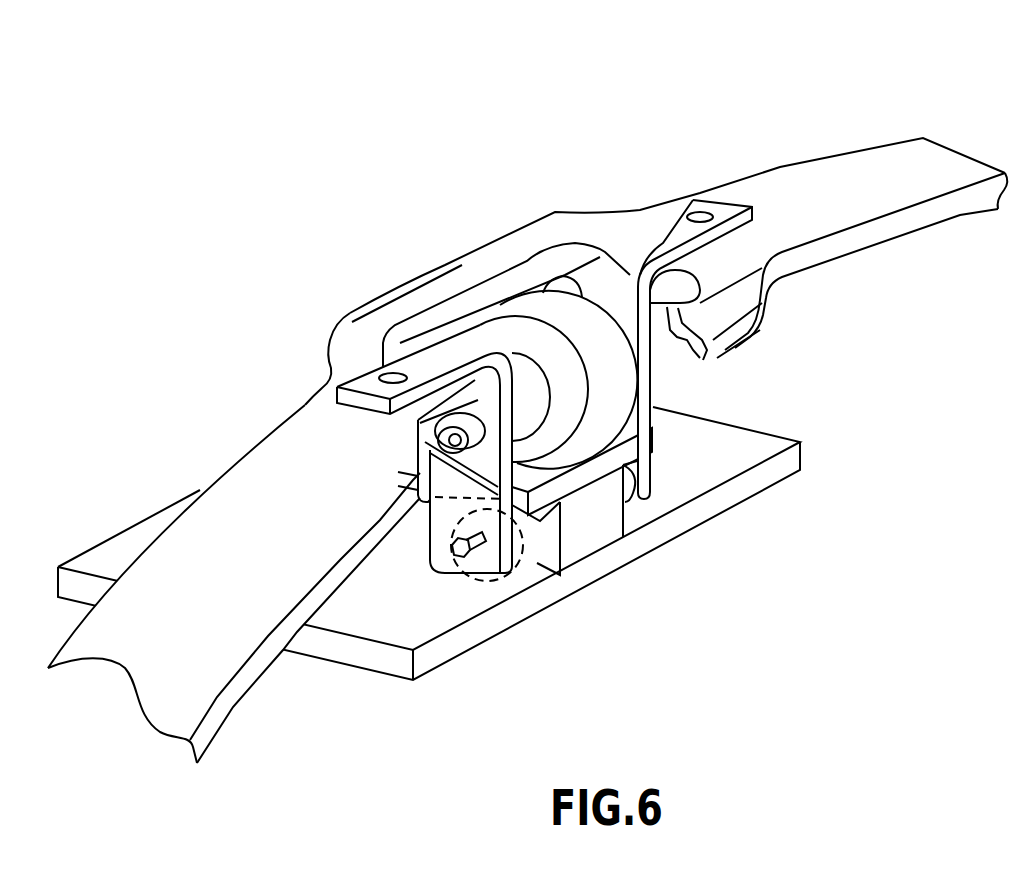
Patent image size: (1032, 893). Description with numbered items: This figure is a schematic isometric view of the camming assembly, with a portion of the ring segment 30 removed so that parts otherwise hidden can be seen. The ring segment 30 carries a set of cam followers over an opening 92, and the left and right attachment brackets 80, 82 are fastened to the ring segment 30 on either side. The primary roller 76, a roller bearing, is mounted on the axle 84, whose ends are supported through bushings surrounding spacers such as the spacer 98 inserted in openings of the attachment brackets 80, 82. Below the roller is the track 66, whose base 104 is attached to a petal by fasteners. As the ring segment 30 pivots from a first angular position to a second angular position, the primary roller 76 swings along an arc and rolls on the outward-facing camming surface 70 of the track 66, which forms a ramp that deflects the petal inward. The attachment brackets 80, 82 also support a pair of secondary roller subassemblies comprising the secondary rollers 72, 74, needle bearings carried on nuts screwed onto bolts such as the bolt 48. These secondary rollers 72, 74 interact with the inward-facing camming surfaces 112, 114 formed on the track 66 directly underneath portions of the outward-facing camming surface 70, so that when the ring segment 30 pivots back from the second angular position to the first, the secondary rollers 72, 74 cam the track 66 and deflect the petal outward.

The ring segment 30 is at (527, 404).
The right attachment bracket 82 is at (664, 237).
The primary roller 76 is at (547, 317).
The opening 92 is at (517, 280).
The spacer 98 is at (524, 395).
The left attachment bracket 80 is at (428, 362).
The axle 84 is at (417, 440).
The track 66 is at (667, 509).
The inward-facing camming surface 114 is at (650, 500).
The secondary roller 74 is at (633, 505).
The outward-facing camming surface 70 is at (528, 483).
The inward-facing camming surface 112 is at (557, 478).
The secondary roller 72 is at (533, 548).
The bolt 48 is at (488, 581).
The base 104 is at (392, 606).